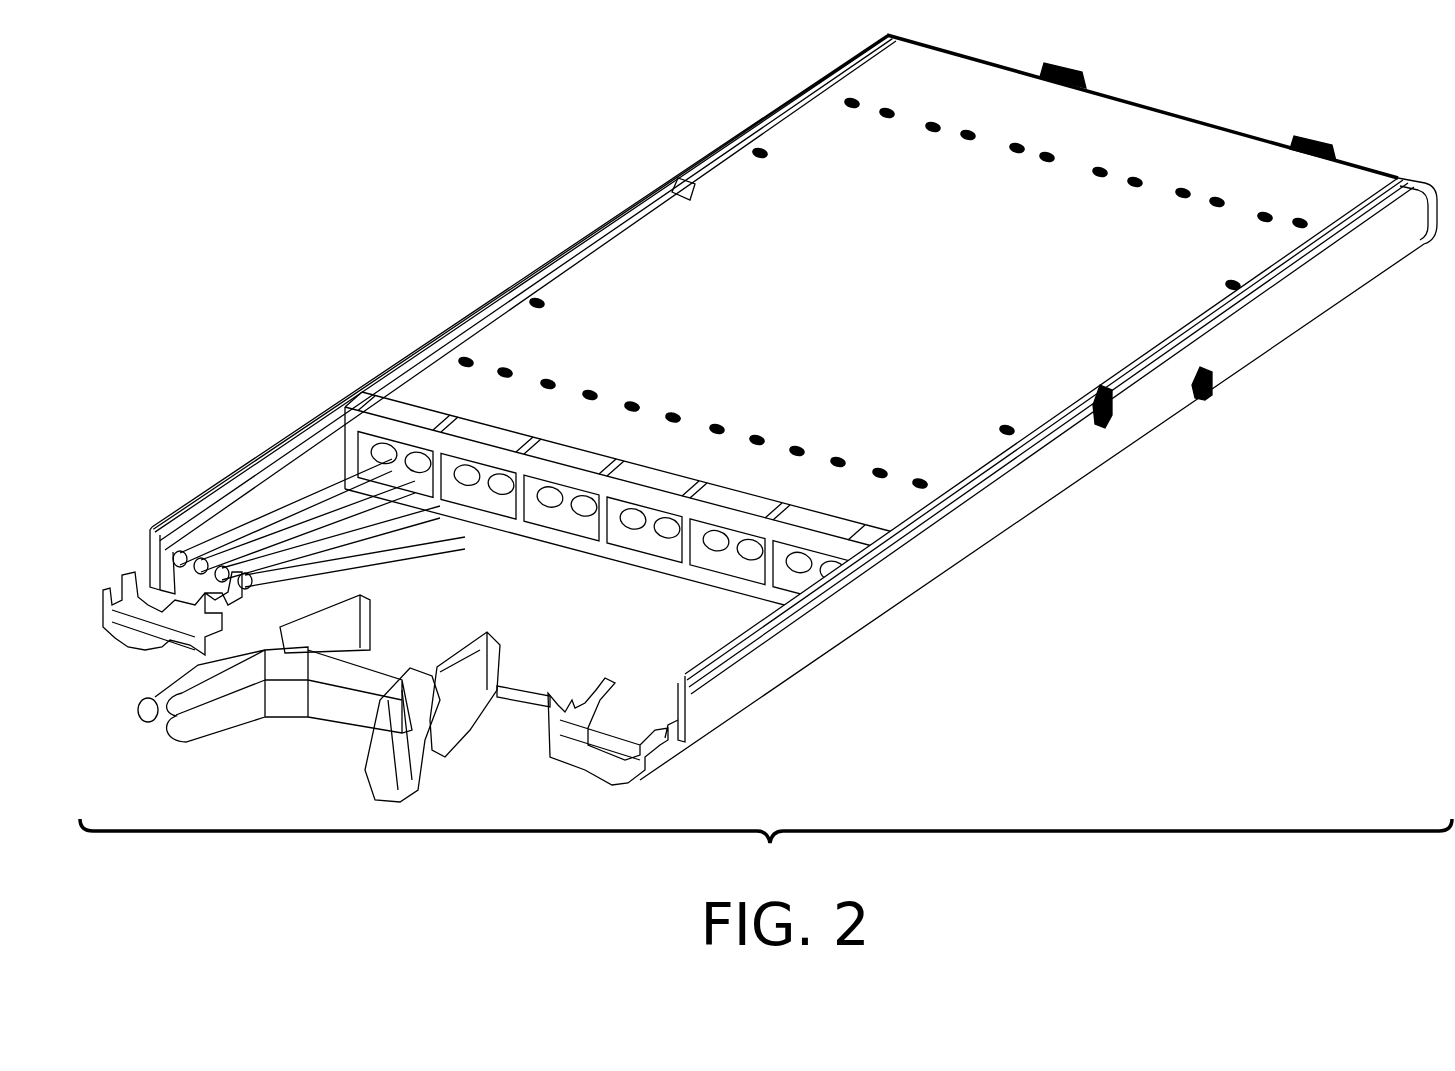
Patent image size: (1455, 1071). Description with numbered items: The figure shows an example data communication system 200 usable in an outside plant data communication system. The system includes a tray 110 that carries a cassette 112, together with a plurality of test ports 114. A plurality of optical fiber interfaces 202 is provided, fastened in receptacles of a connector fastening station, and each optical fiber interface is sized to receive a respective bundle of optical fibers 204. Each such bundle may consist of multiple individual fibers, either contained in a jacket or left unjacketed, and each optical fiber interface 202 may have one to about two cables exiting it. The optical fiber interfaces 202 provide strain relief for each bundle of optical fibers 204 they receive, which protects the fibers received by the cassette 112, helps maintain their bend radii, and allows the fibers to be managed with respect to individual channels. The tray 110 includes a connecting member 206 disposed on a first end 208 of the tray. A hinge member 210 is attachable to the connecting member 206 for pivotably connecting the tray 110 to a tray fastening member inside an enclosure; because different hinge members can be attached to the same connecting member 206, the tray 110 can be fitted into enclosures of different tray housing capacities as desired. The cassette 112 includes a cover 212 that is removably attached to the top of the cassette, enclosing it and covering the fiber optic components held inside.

The tray 110 is at (1053, 497).
The cassette 112 is at (662, 234).
The test ports 114 is at (1062, 68).
The data communication system 200 is at (766, 842).
The optical fiber interfaces 202 is at (411, 416).
The bundle of optical fibers 204 is at (366, 480).
The connecting member 206 is at (370, 600).
The first end 208 is at (538, 712).
The hinge member 210 is at (226, 742).
The cover 212 is at (892, 308).